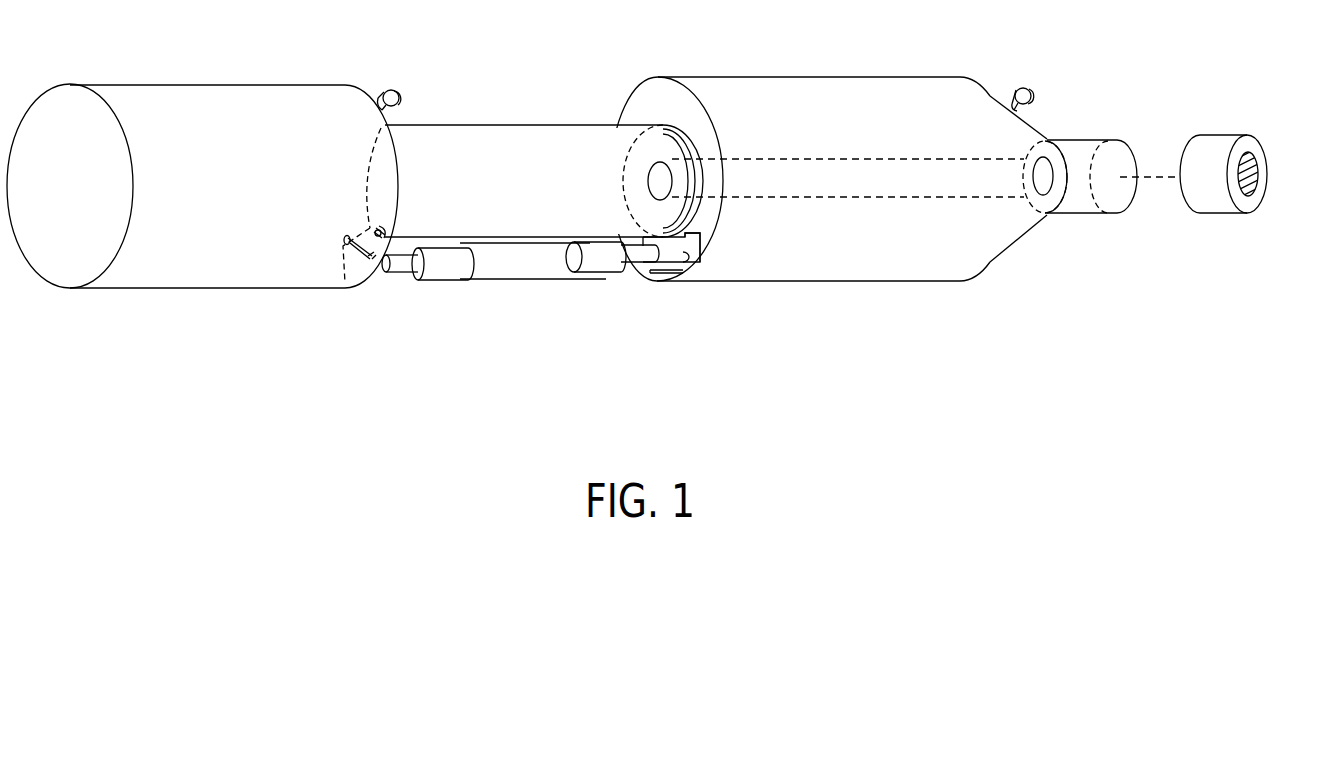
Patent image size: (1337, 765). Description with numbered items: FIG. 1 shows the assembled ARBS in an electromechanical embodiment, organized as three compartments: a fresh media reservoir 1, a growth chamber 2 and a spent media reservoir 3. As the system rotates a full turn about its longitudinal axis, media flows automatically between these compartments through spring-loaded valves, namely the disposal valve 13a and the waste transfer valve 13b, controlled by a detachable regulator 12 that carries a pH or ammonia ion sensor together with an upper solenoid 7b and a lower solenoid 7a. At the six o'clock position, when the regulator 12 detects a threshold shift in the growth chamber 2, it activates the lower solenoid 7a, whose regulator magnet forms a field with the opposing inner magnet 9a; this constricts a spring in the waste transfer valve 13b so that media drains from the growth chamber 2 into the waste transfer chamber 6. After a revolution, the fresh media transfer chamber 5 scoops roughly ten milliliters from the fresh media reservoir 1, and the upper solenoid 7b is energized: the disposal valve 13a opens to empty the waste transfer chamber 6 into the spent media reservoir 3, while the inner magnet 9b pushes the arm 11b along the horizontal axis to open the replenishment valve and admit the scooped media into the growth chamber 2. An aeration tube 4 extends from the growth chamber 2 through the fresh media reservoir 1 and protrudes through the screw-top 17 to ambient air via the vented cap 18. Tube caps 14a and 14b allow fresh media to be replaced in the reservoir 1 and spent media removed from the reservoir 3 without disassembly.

The fresh media reservoir 1 is at (767, 85).
The growth chamber 2 is at (572, 135).
The spent media reservoir 3 is at (237, 87).
The aeration tube 4 is at (802, 185).
The fresh media transfer chamber 5 is at (655, 270).
The waste transfer chamber 6 is at (341, 273).
The lower solenoid 7a is at (430, 280).
The upper solenoid 7b is at (595, 274).
The inner magnet 9a is at (369, 270).
The inner magnet 9b is at (676, 276).
The arm 11b is at (701, 236).
The regulator 12 is at (638, 353).
The disposal valve 13a is at (331, 238).
The waste transfer valve 13b is at (378, 216).
The tube cap 14a is at (1021, 85).
The tube cap 14b is at (386, 82).
The screw-top 17 is at (1134, 130).
The vented cap 18 is at (1277, 156).